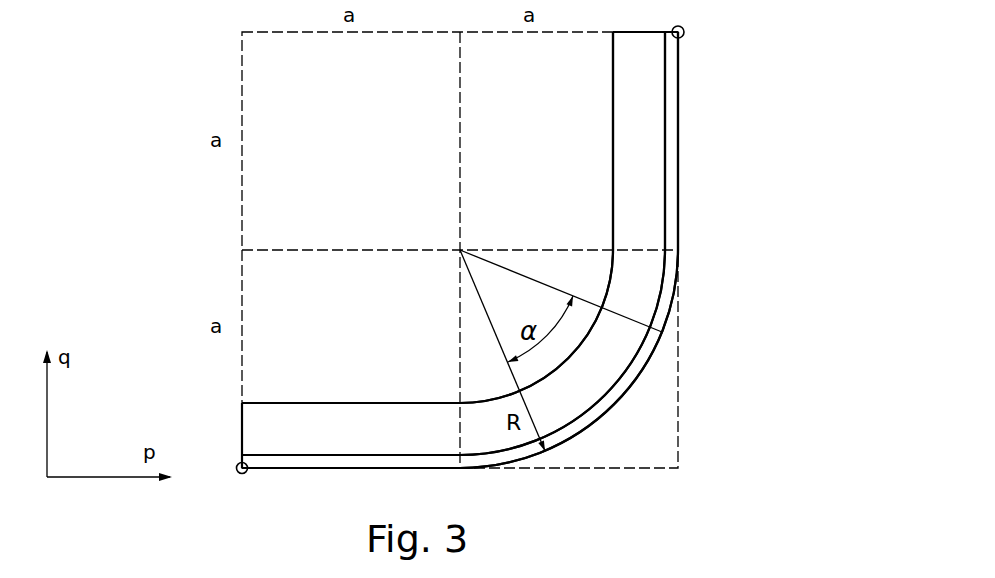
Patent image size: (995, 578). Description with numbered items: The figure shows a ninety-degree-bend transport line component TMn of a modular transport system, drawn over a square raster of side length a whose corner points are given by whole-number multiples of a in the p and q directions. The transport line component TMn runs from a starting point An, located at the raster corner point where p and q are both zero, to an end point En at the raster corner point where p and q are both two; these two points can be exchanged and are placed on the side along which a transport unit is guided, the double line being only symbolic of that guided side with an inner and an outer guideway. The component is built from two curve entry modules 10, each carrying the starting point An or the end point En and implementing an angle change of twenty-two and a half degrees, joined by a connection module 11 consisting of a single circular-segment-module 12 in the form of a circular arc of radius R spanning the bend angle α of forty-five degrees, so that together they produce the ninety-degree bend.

The curve entry module 10 is at (345, 428).
The connection module 11 is at (593, 358).
The circular-segment-module 12 is at (577, 393).
The transport line component TMn is at (639, 178).
The end point En is at (690, 19).
The starting point An is at (226, 480).